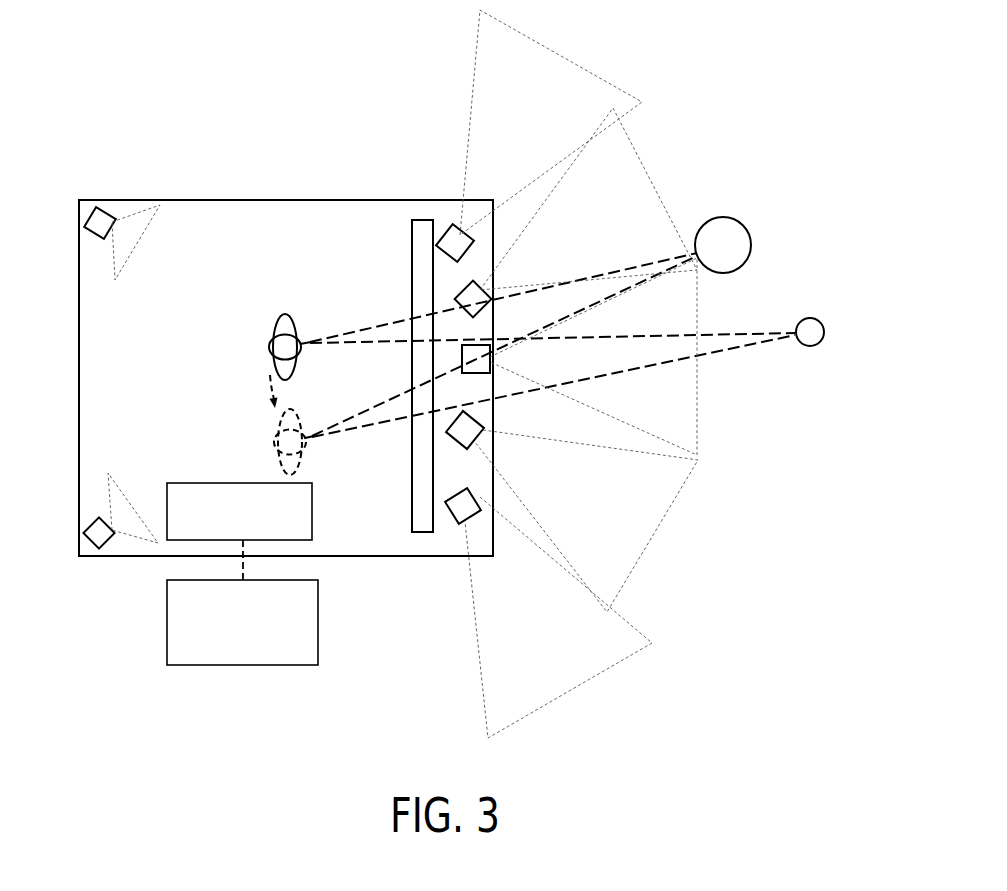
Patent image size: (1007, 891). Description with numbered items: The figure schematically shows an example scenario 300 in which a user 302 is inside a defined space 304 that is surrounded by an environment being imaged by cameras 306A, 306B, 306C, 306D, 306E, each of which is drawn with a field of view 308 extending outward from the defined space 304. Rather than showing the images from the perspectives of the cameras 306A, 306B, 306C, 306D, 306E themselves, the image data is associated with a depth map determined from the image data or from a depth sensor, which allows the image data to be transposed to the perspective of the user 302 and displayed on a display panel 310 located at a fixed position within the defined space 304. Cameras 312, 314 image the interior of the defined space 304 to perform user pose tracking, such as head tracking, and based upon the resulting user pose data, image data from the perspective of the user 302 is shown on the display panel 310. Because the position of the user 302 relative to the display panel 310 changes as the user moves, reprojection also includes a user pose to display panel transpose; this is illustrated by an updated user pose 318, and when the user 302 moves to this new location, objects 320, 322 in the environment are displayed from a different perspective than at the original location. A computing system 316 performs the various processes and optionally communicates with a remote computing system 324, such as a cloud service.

The example scenario 300 is at (698, 43).
The user 302 is at (273, 328).
The defined space 304 is at (200, 226).
The camera 306A is at (453, 227).
The camera 306B is at (478, 282).
The camera 306C is at (492, 356).
The camera 306D is at (480, 437).
The camera 306E is at (477, 498).
The field of view 308 is at (660, 663).
The display panel 310 is at (412, 292).
The camera 312 is at (88, 216).
The camera 314 is at (110, 542).
The computing system 316 is at (302, 532).
The updated user pose 318 is at (256, 431).
The object 320 is at (752, 242).
The object 322 is at (826, 332).
The remote computing system 324 is at (305, 657).